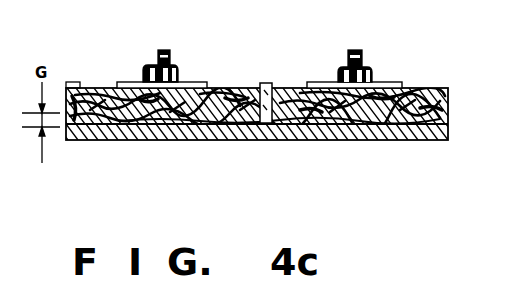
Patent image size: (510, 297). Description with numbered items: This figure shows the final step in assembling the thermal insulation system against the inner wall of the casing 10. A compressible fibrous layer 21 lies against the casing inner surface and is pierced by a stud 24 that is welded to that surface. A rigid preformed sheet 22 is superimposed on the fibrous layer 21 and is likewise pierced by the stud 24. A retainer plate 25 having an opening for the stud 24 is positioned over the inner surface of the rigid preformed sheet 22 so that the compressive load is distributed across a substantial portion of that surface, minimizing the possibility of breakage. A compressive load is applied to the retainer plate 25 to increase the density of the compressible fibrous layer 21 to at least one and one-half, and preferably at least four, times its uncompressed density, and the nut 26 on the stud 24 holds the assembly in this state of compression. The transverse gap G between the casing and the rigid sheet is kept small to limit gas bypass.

The printed circuit board 10 is at (213, 140).
The compressible fibrous layer 21 is at (125, 140).
The rigid preformed sheet 22 is at (168, 140).
The stud 24 is at (354, 50).
The retainer plate 25 is at (378, 82).
The nut 26 is at (338, 75).